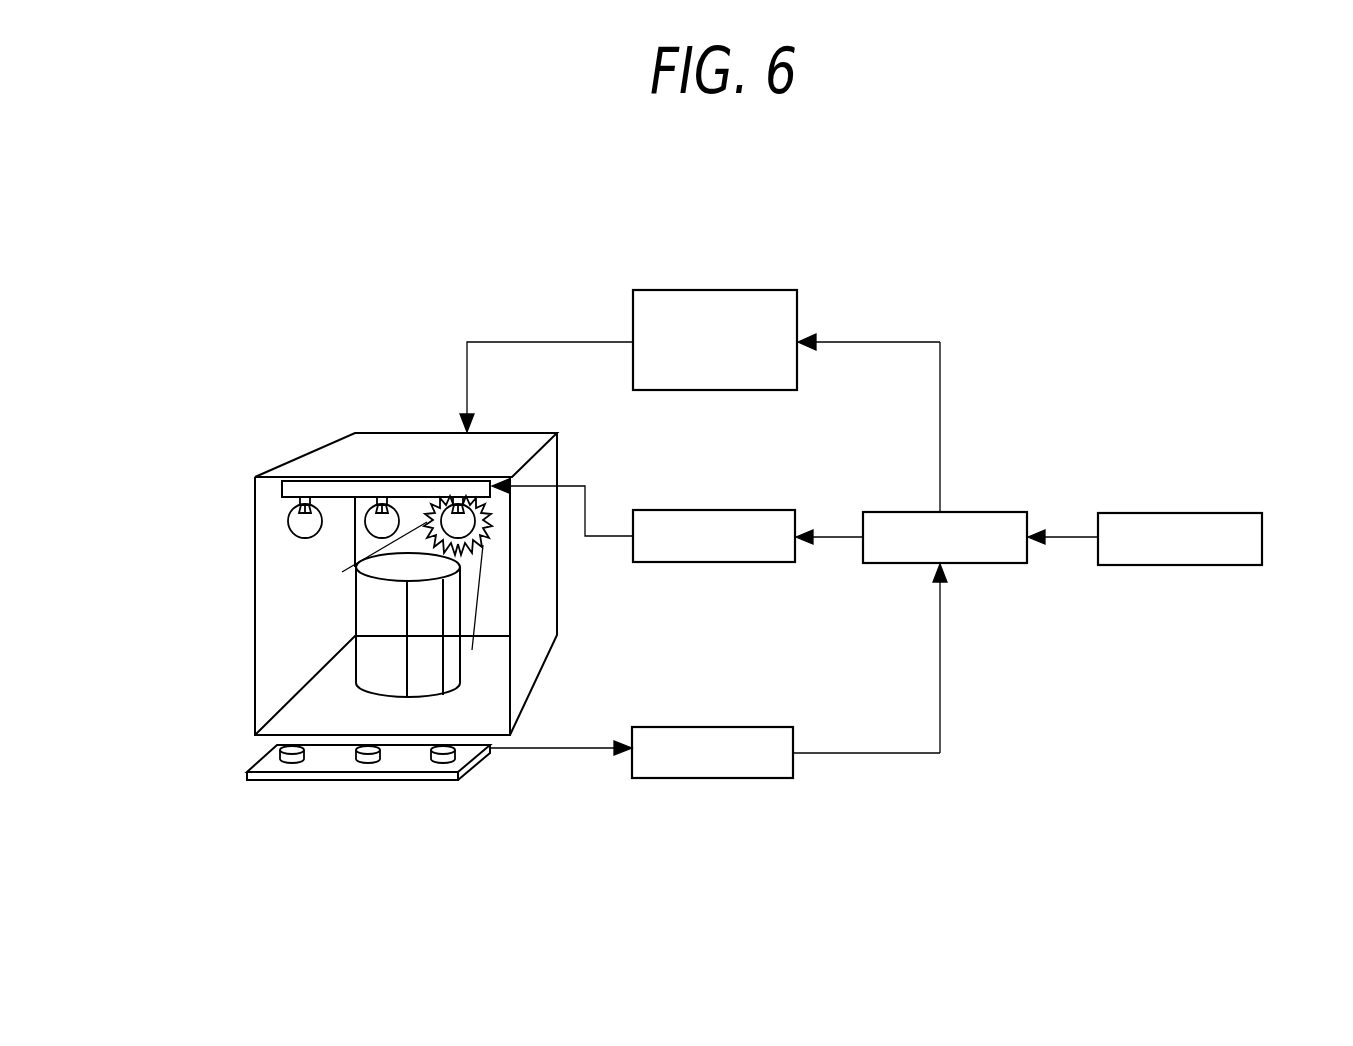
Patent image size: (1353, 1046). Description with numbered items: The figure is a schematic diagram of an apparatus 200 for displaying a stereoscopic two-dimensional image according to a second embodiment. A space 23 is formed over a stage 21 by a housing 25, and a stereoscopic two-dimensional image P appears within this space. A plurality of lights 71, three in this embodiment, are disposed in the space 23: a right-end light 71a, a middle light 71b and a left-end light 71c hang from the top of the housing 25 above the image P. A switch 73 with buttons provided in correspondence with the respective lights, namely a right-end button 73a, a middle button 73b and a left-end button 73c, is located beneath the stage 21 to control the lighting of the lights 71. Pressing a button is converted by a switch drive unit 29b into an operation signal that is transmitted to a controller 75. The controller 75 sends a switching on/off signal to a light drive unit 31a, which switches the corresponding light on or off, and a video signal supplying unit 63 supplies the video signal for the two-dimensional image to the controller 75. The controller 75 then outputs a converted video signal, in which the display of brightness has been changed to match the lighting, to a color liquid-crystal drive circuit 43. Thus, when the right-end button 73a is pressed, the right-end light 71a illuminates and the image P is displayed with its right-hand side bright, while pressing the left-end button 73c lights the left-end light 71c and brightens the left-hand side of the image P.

The apparatus for displaying stereoscopic two-dimensional image 200 is at (965, 288).
The stage 21 is at (303, 710).
The space 23 is at (280, 571).
The housing 25 is at (255, 630).
The stereoscopic two-dimensional image P is at (463, 602).
The lights 71 is at (504, 544).
The right-end light 71a is at (427, 518).
The light 71b is at (370, 500).
The left-end light 71c is at (290, 521).
The switch 73 is at (417, 781).
The right-end button 73a is at (462, 758).
The button 73b is at (368, 774).
The left-end button 73c is at (292, 774).
The color liquid-crystal drive circuit 43 is at (770, 290).
The light drive unit 31a is at (765, 510).
The controller 75 is at (1007, 512).
The video signal supplying unit 63 is at (1232, 513).
The switch drive unit 29b is at (757, 778).